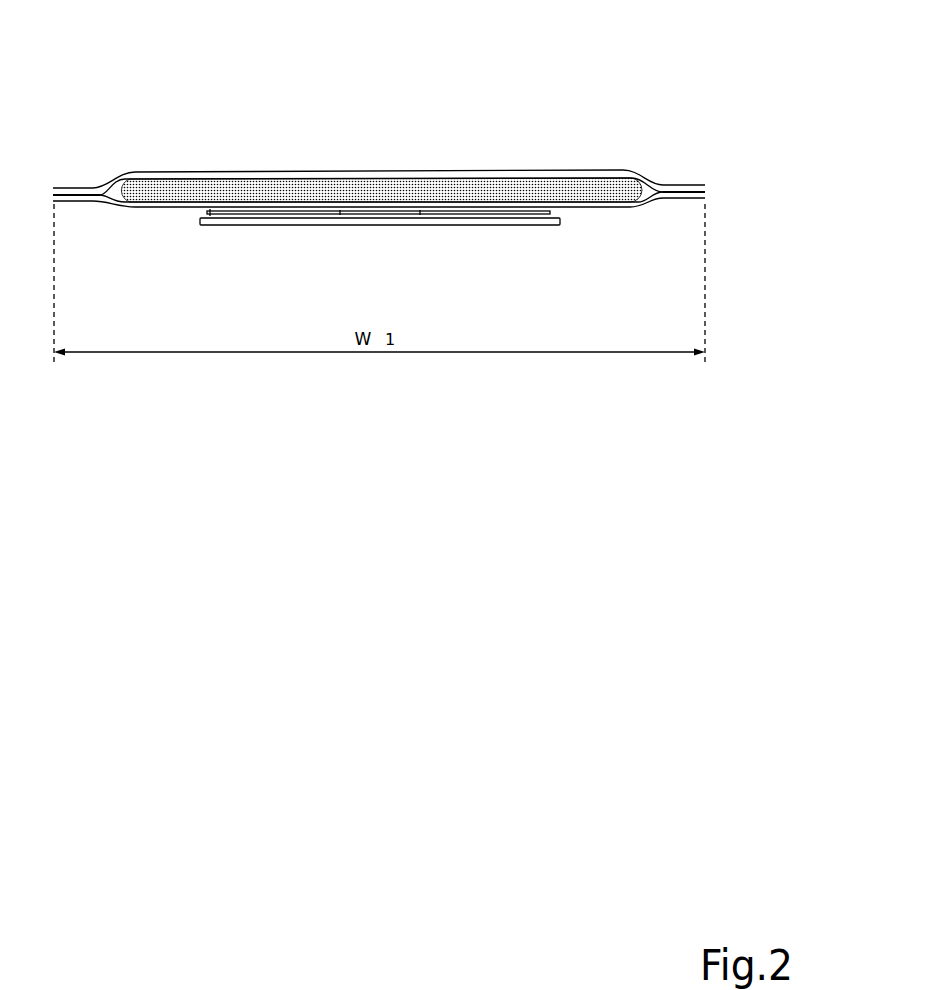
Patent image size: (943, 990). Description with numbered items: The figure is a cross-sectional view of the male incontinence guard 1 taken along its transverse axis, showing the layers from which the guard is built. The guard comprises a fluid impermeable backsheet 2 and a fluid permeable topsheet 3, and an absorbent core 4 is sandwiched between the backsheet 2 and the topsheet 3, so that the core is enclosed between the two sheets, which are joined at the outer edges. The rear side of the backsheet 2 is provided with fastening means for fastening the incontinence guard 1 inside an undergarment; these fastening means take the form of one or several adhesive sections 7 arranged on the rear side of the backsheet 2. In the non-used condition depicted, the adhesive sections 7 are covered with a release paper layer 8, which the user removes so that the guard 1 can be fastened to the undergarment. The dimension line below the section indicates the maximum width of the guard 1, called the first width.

The incontinence guard 1 is at (545, 122).
The backsheet 2 is at (122, 204).
The topsheet 3 is at (268, 174).
The absorbent core 4 is at (183, 197).
The adhesive sections 7 is at (205, 213).
The release paper layer 8 is at (473, 222).